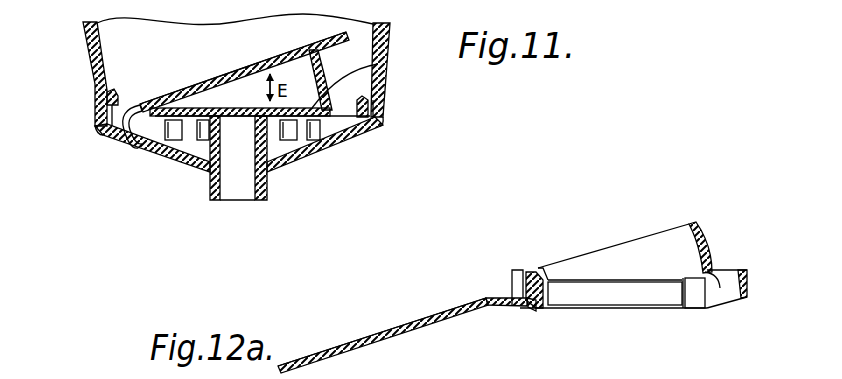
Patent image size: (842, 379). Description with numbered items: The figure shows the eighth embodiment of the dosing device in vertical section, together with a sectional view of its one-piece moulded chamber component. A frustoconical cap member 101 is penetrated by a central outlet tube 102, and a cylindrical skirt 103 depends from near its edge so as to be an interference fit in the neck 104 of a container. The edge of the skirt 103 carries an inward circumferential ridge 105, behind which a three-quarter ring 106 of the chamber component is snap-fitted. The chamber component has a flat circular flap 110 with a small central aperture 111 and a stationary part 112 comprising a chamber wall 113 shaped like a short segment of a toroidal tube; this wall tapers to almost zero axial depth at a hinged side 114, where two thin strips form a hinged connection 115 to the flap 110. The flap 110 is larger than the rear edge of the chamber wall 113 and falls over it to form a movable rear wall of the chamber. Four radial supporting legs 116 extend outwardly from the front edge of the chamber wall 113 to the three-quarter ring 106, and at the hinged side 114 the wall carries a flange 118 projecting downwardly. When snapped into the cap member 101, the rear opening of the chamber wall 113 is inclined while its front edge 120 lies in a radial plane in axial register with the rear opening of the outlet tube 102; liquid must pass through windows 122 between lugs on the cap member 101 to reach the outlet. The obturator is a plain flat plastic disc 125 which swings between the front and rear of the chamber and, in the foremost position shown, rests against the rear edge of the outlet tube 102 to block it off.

In FIG. 11, the frustoconical cap member 101 is at (148, 150).
In FIG. 11, the central outlet tube 102 is at (268, 185).
In FIG. 11, the cylindrical skirt 103 is at (369, 108).
In FIG. 11, the neck 104 is at (93, 82).
In FIG. 11, the inward circumferential ridge 105 is at (118, 92).
In FIG. 11, the three-quarter ring 106 is at (388, 124).
In FIG. 12A, the three-quarter ring 106 is at (742, 272).
In FIG. 11, the circular flap 110 is at (263, 60).
In FIG. 12A, the circular flap 110 is at (320, 352).
In FIG. 11, the central aperture 111 is at (244, 60).
In FIG. 12A, the central aperture 111 is at (380, 333).
In FIG. 12A, the stationary part 112 is at (585, 311).
In FIG. 11, the chamber wall 113 is at (314, 50).
In FIG. 12A, the chamber wall 113 is at (703, 238).
In FIG. 12A, the hinged side 114 is at (548, 270).
In FIG. 11, the hinged connection 115 is at (105, 135).
In FIG. 12A, the hinged connection 115 is at (503, 298).
In FIG. 11, the radial supporting legs 116 is at (342, 122).
In FIG. 12A, the radial supporting legs 116 is at (695, 298).
In FIG. 11, the downward flange 118 is at (152, 138).
In FIG. 12A, the downward flange 118 is at (520, 312).
In FIG. 12A, the edge 120 is at (720, 288).
In FIG. 11, the windows 122 is at (190, 130).
In FIG. 11, the flat plastic disc 125 is at (378, 66).